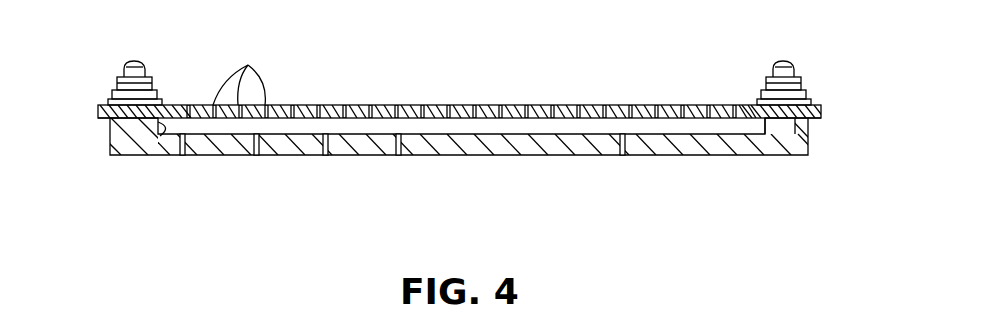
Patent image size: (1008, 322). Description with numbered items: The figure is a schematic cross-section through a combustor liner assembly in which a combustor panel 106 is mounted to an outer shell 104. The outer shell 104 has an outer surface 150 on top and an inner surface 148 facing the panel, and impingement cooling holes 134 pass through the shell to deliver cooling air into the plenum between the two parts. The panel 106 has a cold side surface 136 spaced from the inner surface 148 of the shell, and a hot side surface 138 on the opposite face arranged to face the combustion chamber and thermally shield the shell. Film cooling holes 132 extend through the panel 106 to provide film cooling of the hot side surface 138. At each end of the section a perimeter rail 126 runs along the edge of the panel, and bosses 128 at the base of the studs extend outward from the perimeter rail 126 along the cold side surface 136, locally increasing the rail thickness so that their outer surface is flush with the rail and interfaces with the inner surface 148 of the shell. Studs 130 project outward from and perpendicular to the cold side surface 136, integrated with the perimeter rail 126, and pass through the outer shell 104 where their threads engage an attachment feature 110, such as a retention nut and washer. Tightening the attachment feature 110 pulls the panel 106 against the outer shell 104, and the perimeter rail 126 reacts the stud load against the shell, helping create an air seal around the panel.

The outer shell 104 is at (353, 104).
The combustor panel 106 is at (355, 156).
The attachment feature 110 is at (153, 83).
The perimeter rail 126 is at (94, 119).
The bosses 128 is at (166, 132).
The studs 130 is at (135, 60).
The film cooling holes 132 is at (317, 158).
The impingement cooling holes 134 is at (241, 70).
The cold side surface 136 is at (579, 108).
The hot side surface 138 is at (645, 166).
The inner surface 148 is at (465, 132).
The outer surface 150 is at (432, 90).